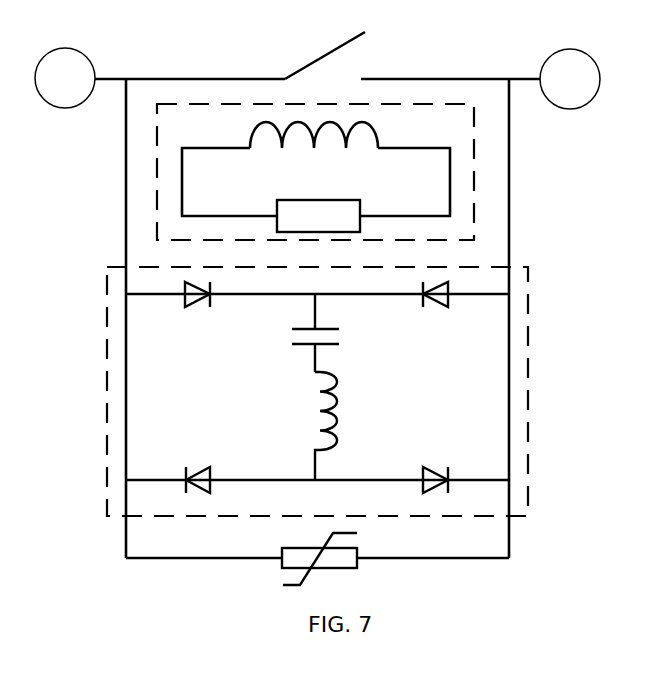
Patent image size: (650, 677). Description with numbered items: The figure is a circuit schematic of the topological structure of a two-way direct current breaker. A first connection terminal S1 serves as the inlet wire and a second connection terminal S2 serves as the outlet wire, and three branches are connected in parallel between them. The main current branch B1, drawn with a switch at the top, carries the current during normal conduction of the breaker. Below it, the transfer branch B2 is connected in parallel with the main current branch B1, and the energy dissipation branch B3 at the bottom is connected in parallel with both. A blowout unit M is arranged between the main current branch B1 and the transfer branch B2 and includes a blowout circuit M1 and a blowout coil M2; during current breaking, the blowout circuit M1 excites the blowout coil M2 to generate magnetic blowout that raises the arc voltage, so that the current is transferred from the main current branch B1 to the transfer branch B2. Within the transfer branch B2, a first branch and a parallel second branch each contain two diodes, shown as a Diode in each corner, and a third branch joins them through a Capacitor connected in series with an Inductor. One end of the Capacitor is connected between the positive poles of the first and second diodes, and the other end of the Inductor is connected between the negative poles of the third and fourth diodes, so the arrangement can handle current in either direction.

The first connection terminal S1 is at (65, 78).
The second connection terminal S2 is at (570, 79).
The main current branch B1 is at (158, 80).
The transfer branch B2 is at (353, 387).
The energy dissipation branch B3 is at (442, 559).
The blowout unit M is at (360, 172).
The blowout circuit M1 is at (318, 218).
The blowout coil M2 is at (378, 127).
The diode Diode is at (189, 305).
The capacitor Capacitor is at (293, 345).
The inductor Inductor is at (336, 374).